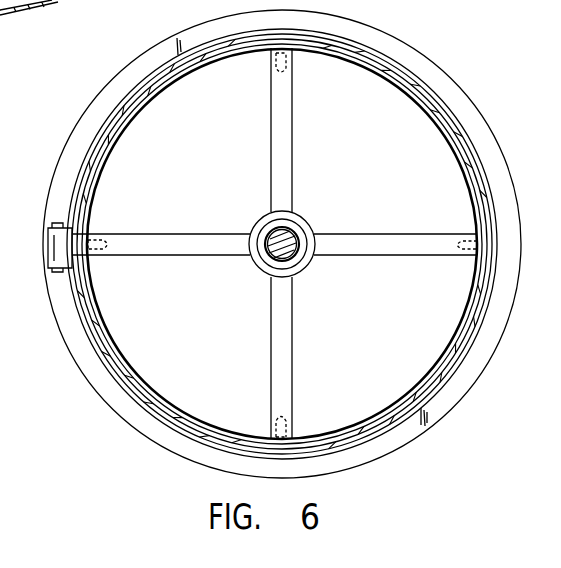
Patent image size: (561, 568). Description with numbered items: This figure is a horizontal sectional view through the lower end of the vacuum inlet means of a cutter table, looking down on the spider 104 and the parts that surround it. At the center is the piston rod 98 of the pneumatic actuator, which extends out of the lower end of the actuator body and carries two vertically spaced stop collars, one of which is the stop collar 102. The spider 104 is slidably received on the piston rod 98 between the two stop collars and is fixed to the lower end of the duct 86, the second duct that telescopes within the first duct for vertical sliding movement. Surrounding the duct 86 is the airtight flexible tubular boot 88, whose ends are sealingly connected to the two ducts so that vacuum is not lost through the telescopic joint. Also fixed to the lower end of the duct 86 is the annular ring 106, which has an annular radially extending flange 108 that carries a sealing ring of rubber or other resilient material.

The duct 86 is at (112, 158).
The flexible tubular boot 88 is at (110, 342).
The piston rod 98 is at (289, 228).
The stop collar 102 is at (316, 262).
The spider 104 is at (293, 160).
The annular ring 106 is at (468, 140).
The annular radially extending flange 108 is at (502, 183).